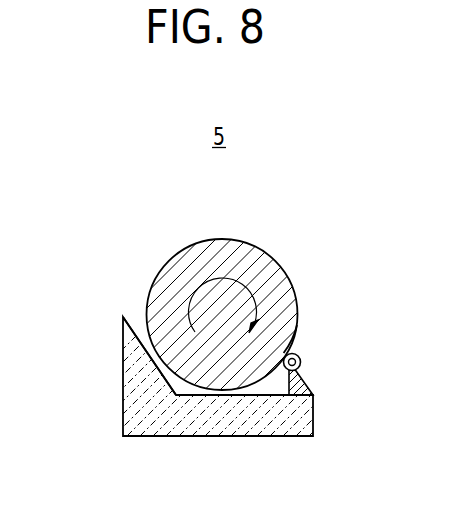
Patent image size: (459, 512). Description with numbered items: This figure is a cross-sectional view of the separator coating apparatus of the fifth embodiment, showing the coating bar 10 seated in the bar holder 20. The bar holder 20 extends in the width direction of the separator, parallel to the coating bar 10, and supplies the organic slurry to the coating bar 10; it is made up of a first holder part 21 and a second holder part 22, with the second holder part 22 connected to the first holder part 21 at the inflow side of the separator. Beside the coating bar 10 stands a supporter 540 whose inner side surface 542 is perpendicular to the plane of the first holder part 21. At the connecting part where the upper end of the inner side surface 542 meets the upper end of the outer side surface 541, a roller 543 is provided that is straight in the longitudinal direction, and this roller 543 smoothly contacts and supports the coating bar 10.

The coating bar 10 is at (229, 258).
The bar holder 20 is at (232, 404).
The first holder part 21 is at (237, 420).
The second holder part 22 is at (132, 358).
The supporter 540 is at (330, 337).
The outer side surface 541 is at (303, 375).
The inner side surface 542 is at (298, 357).
The roller 543 is at (293, 354).